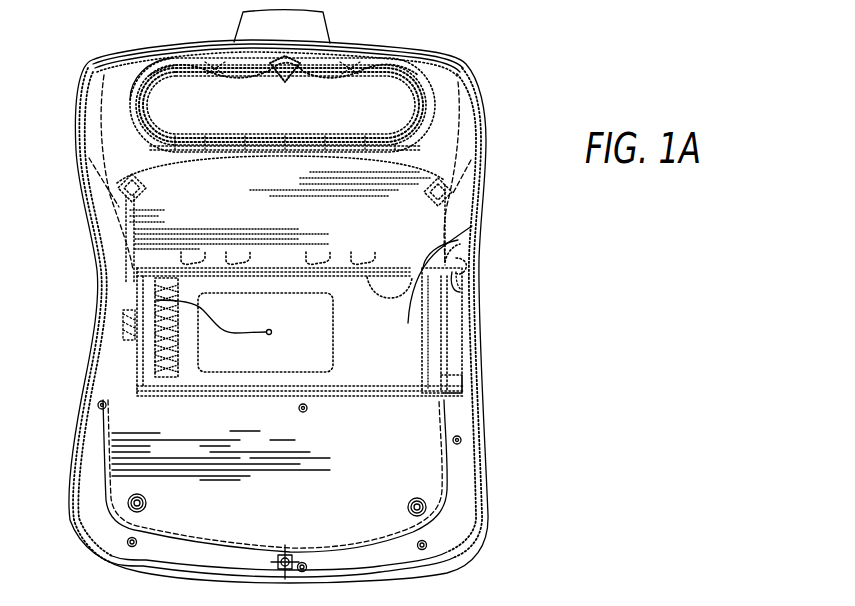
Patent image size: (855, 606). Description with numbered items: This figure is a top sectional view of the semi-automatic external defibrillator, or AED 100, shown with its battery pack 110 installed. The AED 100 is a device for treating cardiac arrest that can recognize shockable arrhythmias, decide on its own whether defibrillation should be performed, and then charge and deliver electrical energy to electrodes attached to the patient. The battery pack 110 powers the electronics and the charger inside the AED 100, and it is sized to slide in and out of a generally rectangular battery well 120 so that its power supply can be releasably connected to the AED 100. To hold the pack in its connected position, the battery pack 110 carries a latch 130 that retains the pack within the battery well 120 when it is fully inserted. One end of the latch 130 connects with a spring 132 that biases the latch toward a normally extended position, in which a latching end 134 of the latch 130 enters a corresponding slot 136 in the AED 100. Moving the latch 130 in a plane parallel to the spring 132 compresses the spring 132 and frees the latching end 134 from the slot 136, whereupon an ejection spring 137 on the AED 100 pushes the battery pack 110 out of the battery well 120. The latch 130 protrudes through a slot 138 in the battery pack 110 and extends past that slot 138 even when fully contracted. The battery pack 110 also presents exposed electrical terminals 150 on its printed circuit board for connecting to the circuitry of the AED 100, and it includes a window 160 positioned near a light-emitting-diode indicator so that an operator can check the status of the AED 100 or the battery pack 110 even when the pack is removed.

The semi-automatic external defibrillator (AED) 100 is at (546, 82).
The battery pack 110 is at (472, 226).
The battery well 120 is at (360, 400).
The latch 130 is at (449, 318).
The spring 132 is at (447, 378).
The latching end 134 is at (465, 265).
The slot 136 is at (453, 264).
The ejection spring 137 is at (123, 322).
The slot 138 is at (458, 290).
The exposed electrical terminals 150 is at (157, 345).
The window 160 is at (156, 300).